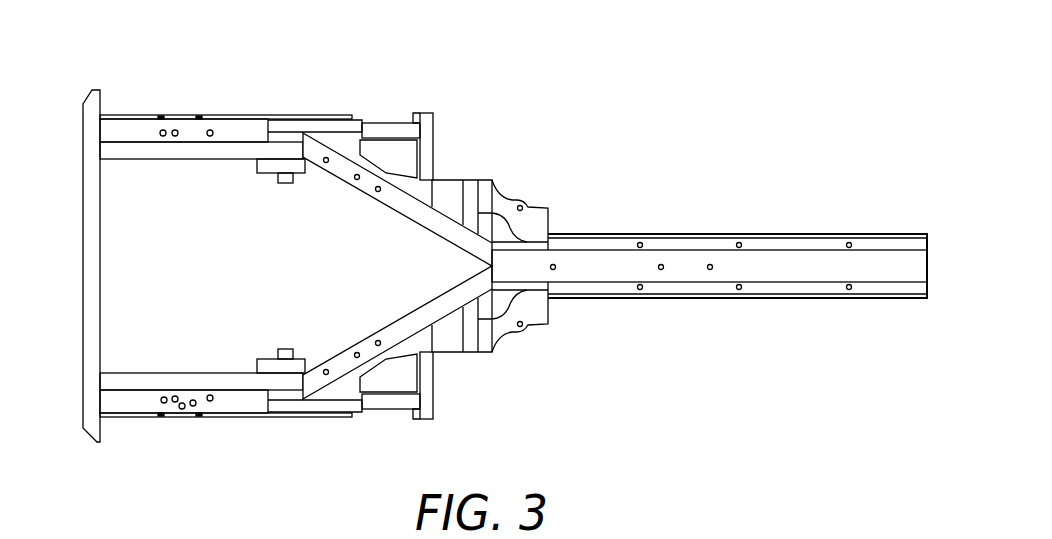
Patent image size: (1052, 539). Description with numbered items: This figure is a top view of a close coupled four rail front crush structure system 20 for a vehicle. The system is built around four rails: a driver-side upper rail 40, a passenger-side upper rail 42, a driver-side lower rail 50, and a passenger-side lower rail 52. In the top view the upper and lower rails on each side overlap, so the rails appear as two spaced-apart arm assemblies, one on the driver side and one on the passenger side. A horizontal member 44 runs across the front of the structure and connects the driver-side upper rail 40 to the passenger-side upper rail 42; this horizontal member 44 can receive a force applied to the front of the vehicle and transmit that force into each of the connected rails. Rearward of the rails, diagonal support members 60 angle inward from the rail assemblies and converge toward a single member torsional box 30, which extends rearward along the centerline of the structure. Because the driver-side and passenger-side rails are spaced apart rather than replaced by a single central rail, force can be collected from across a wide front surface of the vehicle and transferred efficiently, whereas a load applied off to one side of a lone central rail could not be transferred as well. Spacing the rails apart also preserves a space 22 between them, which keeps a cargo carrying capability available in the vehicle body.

The front crush structure system 20 is at (393, 198).
The space 22 is at (212, 238).
The single member torsional box 30 is at (673, 250).
The driver-side upper rail 40 is at (152, 397).
The passenger-side upper rail 42 is at (189, 130).
The horizontal member 44 is at (83, 376).
The driver-side lower rail 50 is at (140, 398).
The passenger-side lower rail 52 is at (140, 132).
The diagonal support members 60 is at (343, 168).